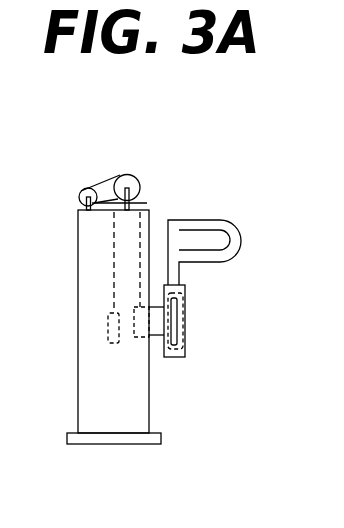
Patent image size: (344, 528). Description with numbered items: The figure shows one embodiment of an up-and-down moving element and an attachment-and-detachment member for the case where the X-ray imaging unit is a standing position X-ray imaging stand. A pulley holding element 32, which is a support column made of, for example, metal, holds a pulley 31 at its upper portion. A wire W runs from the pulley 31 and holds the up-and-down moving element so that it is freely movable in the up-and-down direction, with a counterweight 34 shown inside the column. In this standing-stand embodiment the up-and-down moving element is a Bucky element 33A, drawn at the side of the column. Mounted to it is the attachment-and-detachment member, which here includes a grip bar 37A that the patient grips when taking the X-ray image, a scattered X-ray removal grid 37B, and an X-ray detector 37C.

The pulley 31 is at (135, 177).
The wire W is at (147, 203).
The pulley holding element 32 is at (78, 266).
The counterweight 34 is at (108, 325).
The Bucky element 33A is at (173, 357).
The grip bar 37A is at (200, 257).
The scattered X-ray removal grid 37B is at (185, 323).
The X-ray detector 37C is at (178, 357).